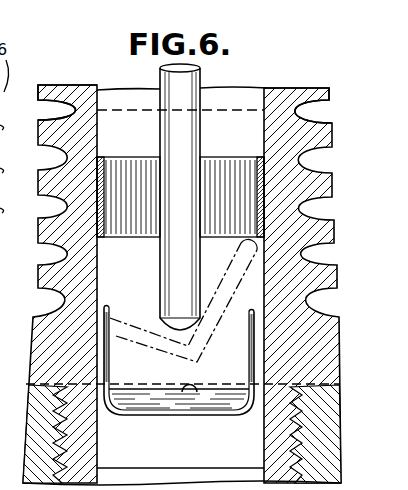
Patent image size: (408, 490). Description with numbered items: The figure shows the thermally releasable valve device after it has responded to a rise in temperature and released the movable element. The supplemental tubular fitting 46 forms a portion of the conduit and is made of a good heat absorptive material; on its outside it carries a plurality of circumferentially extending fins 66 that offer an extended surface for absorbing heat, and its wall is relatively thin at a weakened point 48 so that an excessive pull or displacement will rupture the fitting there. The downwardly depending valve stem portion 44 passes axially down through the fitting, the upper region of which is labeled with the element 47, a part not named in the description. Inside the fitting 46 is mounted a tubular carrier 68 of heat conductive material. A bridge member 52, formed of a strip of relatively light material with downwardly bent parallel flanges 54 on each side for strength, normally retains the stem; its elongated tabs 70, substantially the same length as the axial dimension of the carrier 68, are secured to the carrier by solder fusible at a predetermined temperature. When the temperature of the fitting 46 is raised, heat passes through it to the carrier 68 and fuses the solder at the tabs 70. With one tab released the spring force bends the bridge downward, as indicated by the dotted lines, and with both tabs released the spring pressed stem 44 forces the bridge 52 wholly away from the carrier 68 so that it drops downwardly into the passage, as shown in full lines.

The valve stem portion 44 is at (160, 263).
The supplemental tubular fitting 46 is at (292, 98).
The upper chamber 47 is at (232, 125).
The weakened point 48 is at (68, 108).
The bridge member 52 is at (228, 283).
The flanges 54 is at (148, 400).
The fins 66 is at (315, 177).
The tubular carrier 68 is at (105, 175).
The elongated tabs 70 is at (108, 350).